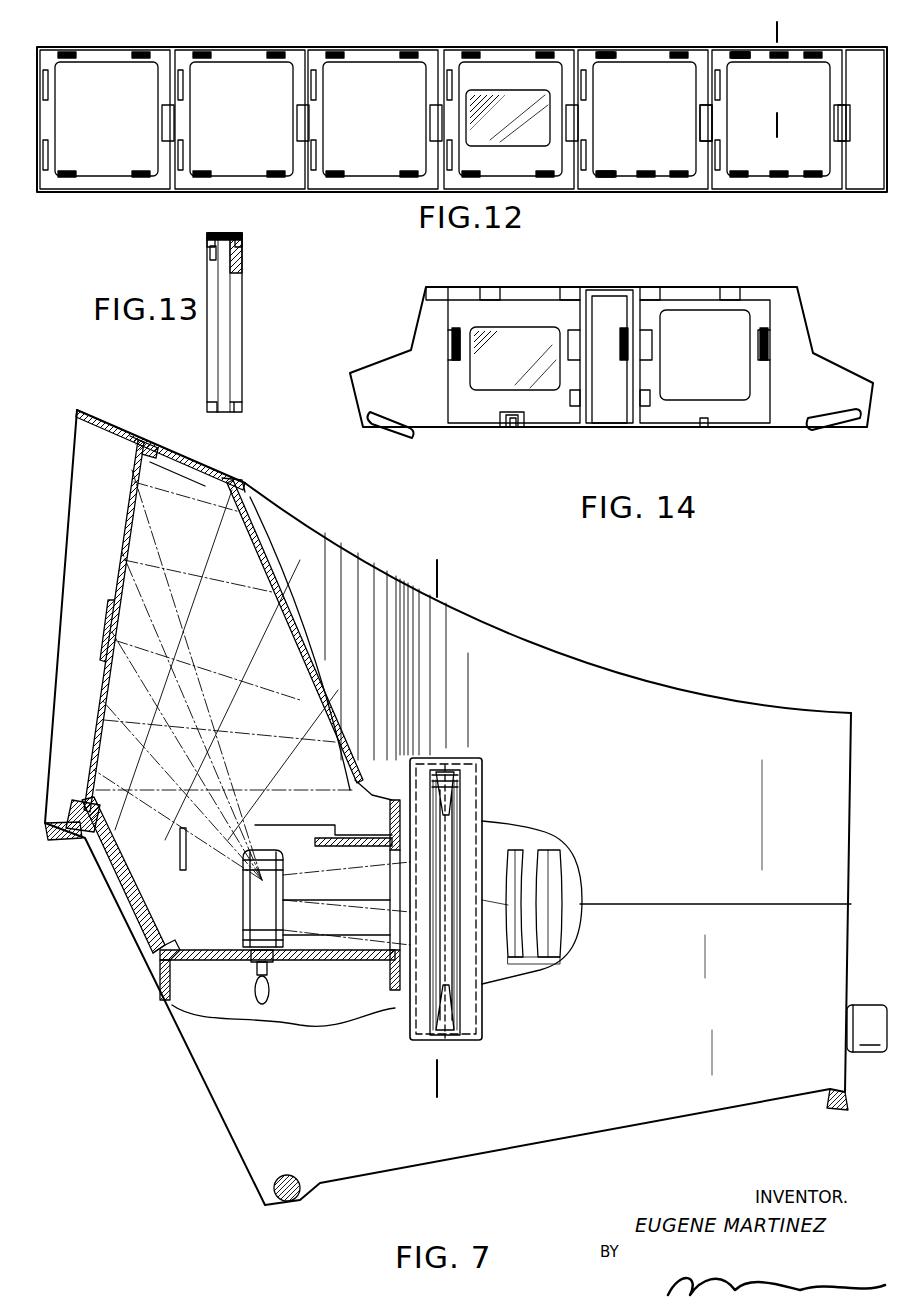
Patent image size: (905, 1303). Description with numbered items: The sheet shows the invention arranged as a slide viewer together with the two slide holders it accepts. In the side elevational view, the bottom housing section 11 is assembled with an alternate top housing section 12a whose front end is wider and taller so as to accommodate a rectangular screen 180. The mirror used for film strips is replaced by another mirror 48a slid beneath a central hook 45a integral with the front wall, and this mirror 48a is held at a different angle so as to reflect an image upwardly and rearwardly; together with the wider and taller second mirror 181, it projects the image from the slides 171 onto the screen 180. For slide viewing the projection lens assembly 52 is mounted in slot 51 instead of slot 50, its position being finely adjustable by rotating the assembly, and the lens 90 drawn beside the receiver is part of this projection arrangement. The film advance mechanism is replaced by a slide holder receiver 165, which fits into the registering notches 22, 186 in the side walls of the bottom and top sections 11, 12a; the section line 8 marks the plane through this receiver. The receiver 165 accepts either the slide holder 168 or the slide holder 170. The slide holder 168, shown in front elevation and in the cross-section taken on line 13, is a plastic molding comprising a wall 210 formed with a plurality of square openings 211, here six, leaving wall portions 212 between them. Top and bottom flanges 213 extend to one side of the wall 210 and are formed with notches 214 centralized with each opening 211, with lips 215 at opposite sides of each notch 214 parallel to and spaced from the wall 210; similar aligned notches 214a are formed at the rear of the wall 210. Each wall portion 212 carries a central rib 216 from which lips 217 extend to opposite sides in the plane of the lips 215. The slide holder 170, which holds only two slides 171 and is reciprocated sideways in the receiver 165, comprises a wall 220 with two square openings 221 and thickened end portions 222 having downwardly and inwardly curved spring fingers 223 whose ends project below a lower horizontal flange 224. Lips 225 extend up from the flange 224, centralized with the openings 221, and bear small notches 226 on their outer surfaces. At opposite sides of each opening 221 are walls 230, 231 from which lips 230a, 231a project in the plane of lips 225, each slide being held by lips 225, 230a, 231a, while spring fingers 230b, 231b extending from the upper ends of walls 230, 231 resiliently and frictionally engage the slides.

In FIG. 7, the bottom housing section 11 is at (682, 1126).
In FIG. 7, the top housing section 12a is at (732, 680).
In FIG. 7, the section line 8- 8 is at (434, 578).
In FIG. 7, the notches 22 is at (480, 1012).
In FIG. 7, the central hook 45a is at (98, 872).
In FIG. 7, the mirror 48a is at (120, 900).
In FIG. 7, the slot 50 is at (382, 962).
In FIG. 7, the slot 51 is at (250, 968).
In FIG. 7, the projection lens assembly 52 is at (292, 880).
In FIG. 7, the projection lens 90 is at (540, 850).
In FIG. 7, the slide holder receiver 165 is at (420, 1045).
In FIG. 7, the screen 180 is at (136, 530).
In FIG. 7, the second mirror 181 is at (282, 620).
In FIG. 7, the notches 186 is at (472, 796).
In FIG. 12, the slide holder 168 is at (378, 195).
In FIG. 13, the slide holder 168 is at (258, 378).
In FIG. 12, the slides 171 is at (500, 68).
In FIG. 14, the slides 171 is at (485, 300).
In FIG. 12, the square openings 211 is at (722, 95).
In FIG. 12, the wall portions 212 is at (836, 88).
In FIG. 12, the top and bottom flanges 213 is at (770, 30).
In FIG. 13, the top and bottom flanges 213 is at (220, 235).
In FIG. 12, the notches 214 is at (778, 55).
In FIG. 13, the notches 214 is at (207, 238).
In FIG. 13, the notches 214a is at (242, 243).
In FIG. 12, the lips 215 is at (600, 50).
In FIG. 13, the lips 215 is at (208, 252).
In FIG. 12, the central rib 216 is at (587, 86).
In FIG. 12, the lips 217 is at (587, 112).
In FIG. 13, the wall 210 is at (241, 265).
In FIG. 12, the section line 13- 13 is at (778, 31).
In FIG. 14, the slide holder 170 is at (732, 285).
In FIG. 14, the wall 220 is at (610, 412).
In FIG. 14, the square openings 221 is at (695, 380).
In FIG. 14, the thickened end portions 222 is at (420, 322).
In FIG. 14, the spring fingers 223 is at (405, 445).
In FIG. 14, the lower horizontal flange 224 is at (548, 432).
In FIG. 14, the lips 225 is at (508, 432).
In FIG. 14, the small notches 226 is at (514, 432).
In FIG. 14, the wall 230 is at (636, 358).
In FIG. 14, the lip 230a is at (570, 400).
In FIG. 14, the spring finger 230b is at (575, 335).
In FIG. 14, the wall 231 is at (458, 430).
In FIG. 14, the lip 231a is at (470, 390).
In FIG. 14, the spring finger 231b is at (452, 342).